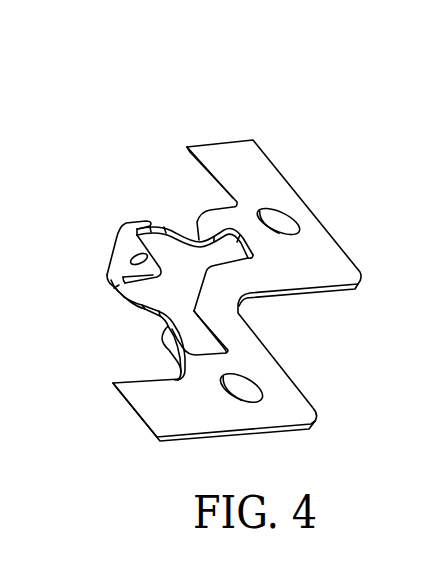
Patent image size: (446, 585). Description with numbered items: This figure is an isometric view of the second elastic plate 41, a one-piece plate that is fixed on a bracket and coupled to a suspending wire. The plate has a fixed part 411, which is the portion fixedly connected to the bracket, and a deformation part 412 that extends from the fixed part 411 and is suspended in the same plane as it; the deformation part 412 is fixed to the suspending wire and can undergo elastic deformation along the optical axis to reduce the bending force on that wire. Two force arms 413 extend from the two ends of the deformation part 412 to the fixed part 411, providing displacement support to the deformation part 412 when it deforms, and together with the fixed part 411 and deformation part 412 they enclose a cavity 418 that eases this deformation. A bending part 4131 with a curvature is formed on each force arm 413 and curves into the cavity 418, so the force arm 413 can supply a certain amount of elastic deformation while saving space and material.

The second elastic plate 41 is at (228, 66).
The fixed part 411 is at (252, 167).
The deformation part 412 is at (112, 253).
The force arm 413 is at (148, 220).
The bending part 4131 is at (157, 320).
The cavity 418 is at (180, 255).